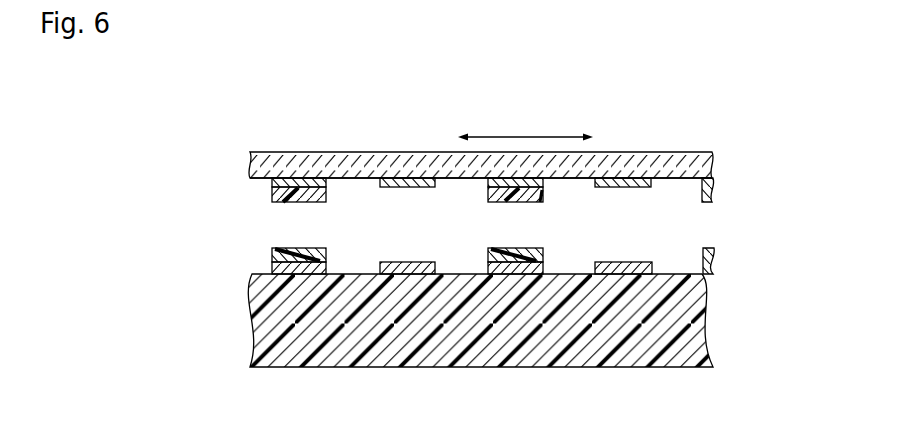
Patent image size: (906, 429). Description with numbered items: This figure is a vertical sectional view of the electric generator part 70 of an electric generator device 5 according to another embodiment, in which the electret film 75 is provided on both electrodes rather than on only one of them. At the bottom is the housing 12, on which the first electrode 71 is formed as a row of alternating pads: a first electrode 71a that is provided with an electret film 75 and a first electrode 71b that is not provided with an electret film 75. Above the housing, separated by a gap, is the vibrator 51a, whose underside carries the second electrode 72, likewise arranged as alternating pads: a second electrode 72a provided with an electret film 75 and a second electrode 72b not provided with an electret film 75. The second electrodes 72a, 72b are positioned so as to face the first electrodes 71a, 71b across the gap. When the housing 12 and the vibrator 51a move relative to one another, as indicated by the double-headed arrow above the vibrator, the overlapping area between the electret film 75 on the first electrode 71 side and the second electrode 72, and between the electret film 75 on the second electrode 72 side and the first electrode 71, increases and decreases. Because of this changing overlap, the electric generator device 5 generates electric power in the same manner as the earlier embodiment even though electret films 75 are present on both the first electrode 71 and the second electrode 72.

The electric generator device 5 is at (272, 146).
The vibrator 51a is at (340, 162).
The electric generator part 70 is at (690, 110).
The second electrode 72 is at (414, 151).
The second electrode provided with an electret film 72a is at (273, 182).
The second electrode not provided with an electret film 72b is at (411, 184).
The electret film 75 is at (273, 192).
The first electrode 71 is at (378, 338).
The first electrode provided with an electret film 71a is at (273, 268).
The first electrode not provided with an electret film 71b is at (403, 267).
The housing 12 is at (270, 334).